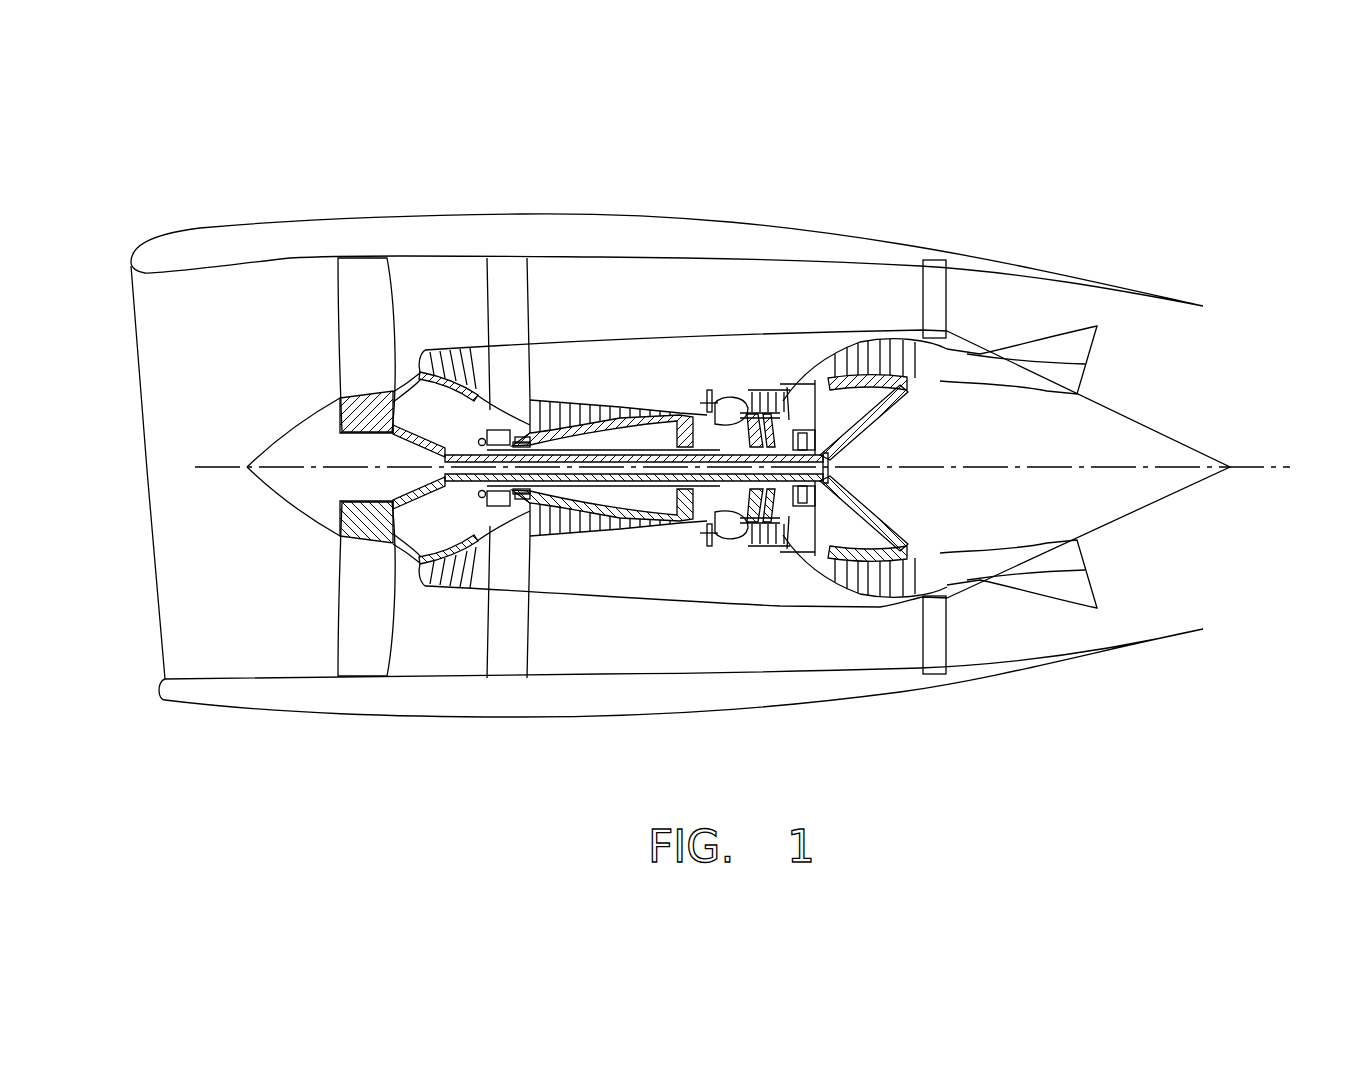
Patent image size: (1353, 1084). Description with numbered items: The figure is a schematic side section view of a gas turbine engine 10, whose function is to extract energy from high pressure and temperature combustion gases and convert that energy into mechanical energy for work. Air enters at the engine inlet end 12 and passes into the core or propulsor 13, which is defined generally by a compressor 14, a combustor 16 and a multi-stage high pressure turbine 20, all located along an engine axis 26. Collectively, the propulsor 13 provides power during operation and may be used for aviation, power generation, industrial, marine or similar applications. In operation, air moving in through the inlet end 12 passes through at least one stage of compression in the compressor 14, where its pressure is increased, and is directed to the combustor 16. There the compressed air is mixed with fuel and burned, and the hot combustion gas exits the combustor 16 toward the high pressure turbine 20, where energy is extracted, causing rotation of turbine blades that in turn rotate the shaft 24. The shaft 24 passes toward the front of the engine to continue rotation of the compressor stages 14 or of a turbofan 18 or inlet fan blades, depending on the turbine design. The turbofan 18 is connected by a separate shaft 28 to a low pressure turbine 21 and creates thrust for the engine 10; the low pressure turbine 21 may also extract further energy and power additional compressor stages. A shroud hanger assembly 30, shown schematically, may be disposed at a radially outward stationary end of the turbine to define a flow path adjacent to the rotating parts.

The gas turbine engine 10 is at (965, 195).
The engine inlet end 12 is at (151, 308).
The core or propulsor 13 is at (667, 328).
The compressor 14 is at (567, 400).
The combustor 16 is at (728, 393).
The turbofan 18 is at (307, 320).
The multi-stage high pressure turbine 20 is at (785, 368).
The low pressure turbine 21 is at (895, 400).
The shaft 24 is at (705, 517).
The engine axis 26 is at (1285, 465).
The shaft 28 is at (618, 482).
The shroud hanger assembly 30 is at (777, 377).